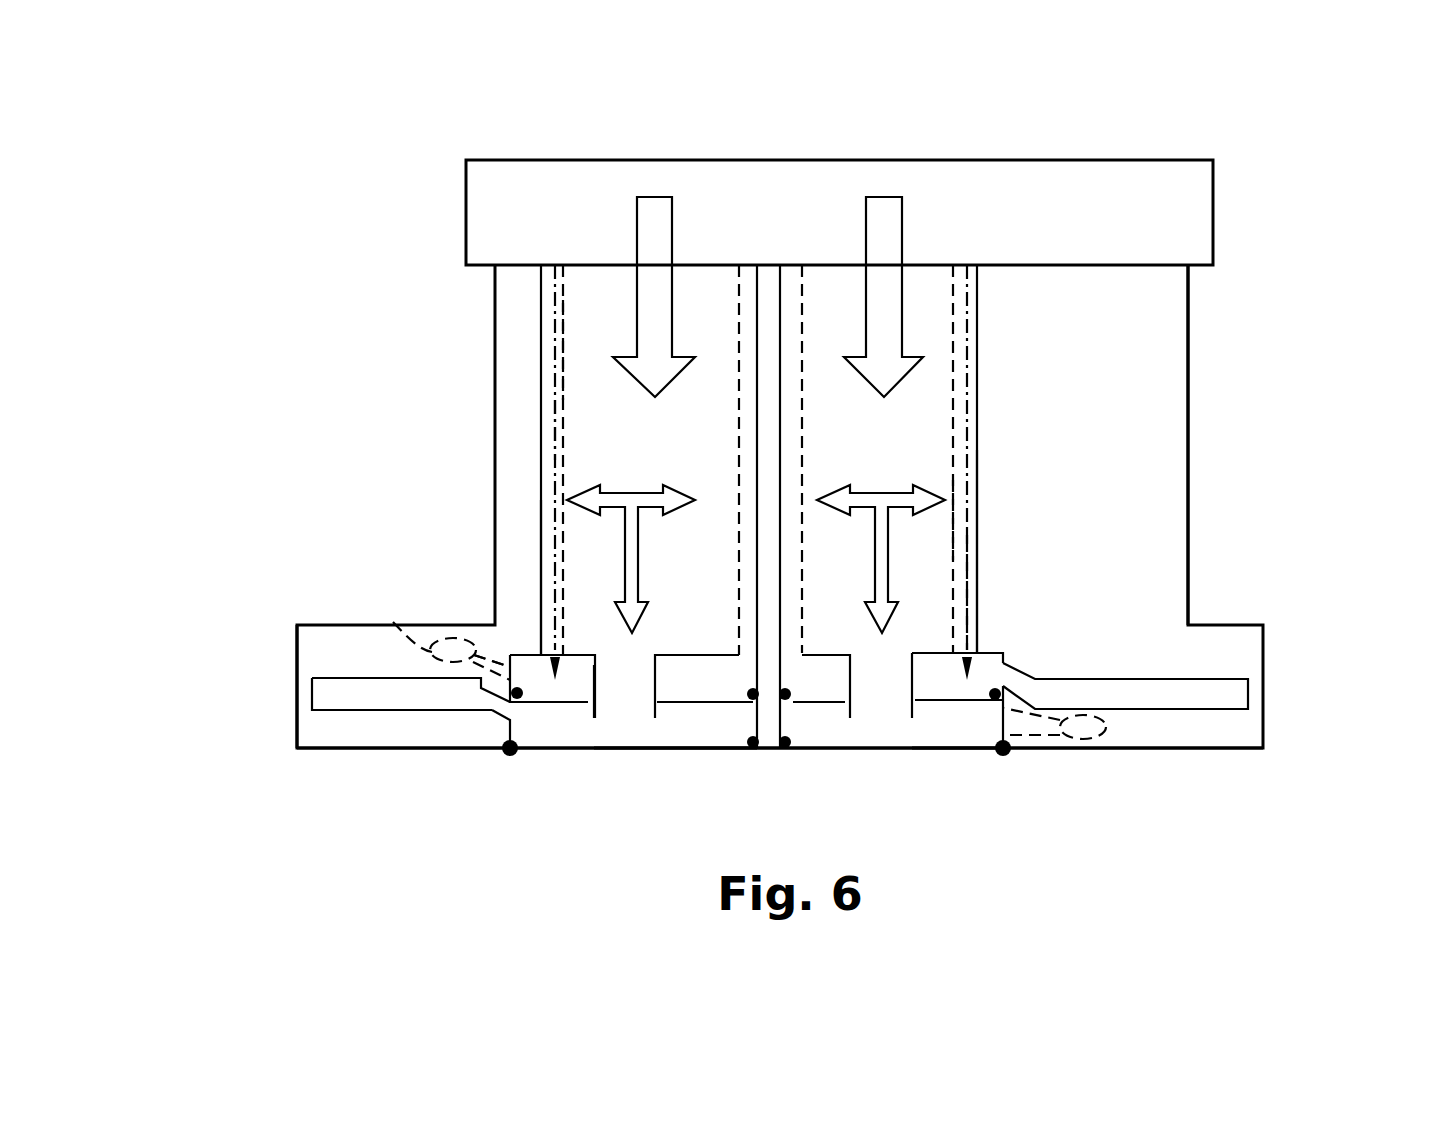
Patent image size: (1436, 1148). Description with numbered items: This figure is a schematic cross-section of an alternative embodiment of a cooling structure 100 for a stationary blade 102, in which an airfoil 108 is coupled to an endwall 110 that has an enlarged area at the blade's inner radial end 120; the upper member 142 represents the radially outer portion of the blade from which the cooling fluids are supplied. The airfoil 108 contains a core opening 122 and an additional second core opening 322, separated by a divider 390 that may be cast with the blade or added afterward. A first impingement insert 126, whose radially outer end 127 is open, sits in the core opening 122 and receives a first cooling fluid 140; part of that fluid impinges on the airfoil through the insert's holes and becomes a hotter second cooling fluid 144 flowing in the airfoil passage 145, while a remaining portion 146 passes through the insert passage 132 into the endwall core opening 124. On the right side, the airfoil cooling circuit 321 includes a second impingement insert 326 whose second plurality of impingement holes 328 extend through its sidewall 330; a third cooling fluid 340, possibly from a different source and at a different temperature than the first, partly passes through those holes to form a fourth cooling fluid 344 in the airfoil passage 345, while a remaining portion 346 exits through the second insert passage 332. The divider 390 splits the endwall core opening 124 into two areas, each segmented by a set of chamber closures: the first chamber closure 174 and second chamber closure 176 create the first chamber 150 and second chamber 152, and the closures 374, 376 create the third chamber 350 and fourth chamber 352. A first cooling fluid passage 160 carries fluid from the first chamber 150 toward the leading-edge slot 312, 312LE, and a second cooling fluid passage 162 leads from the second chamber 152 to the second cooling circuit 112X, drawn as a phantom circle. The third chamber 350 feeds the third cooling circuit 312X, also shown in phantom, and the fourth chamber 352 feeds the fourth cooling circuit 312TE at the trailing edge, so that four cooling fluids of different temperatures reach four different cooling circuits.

The cooling structure 100 is at (428, 602).
The stationary blade 102 is at (455, 178).
The airfoil 108 is at (1148, 358).
The endwall 110 is at (318, 647).
The second cooling circuit 112X is at (393, 622).
The base 120 is at (503, 892).
The core opening 122 is at (540, 400).
The endwall core opening 124 is at (1005, 708).
The impingement insert 126 is at (552, 340).
The radially outer end 127 is at (578, 290).
The insert passage 132 is at (640, 700).
The first cooling fluid 140 is at (650, 215).
The upper member 142 is at (1075, 234).
The second cooling fluid 144 is at (555, 492).
The airfoil passage 145 is at (548, 538).
The remaining portion of first cooling fluid 146 is at (642, 612).
The first chamber 150 is at (663, 735).
The second chamber 152 is at (567, 690).
The first cooling fluid passage 160 is at (493, 703).
The second cooling fluid passage 162 is at (473, 680).
The first chamber closure 174 is at (693, 750).
The second chamber closure 176 is at (722, 702).
The slot 312 is at (312, 703).
The slot leading edge 312LE is at (330, 690).
The fourth cooling circuit 312TE is at (1225, 692).
The third cooling circuit 312X is at (1103, 738).
The airfoil cooling circuit 321 is at (568, 428).
The second core opening 322 is at (975, 477).
The second impingement insert 326 is at (963, 512).
The second plurality of impingement holes 328 is at (955, 537).
The sidewall 330 is at (955, 428).
The second insert passage 332 is at (910, 680).
The third cooling fluid 340 is at (888, 215).
The fourth cooling fluid 344 is at (968, 383).
The airfoil passage 345 is at (965, 286).
The remaining portion of third cooling fluid 346 is at (870, 620).
The third chamber 350 is at (968, 733).
The fourth chamber 352 is at (820, 690).
The first chamber closure 374 is at (922, 750).
The second chamber closure 376 is at (935, 702).
The divider 390 is at (768, 298).